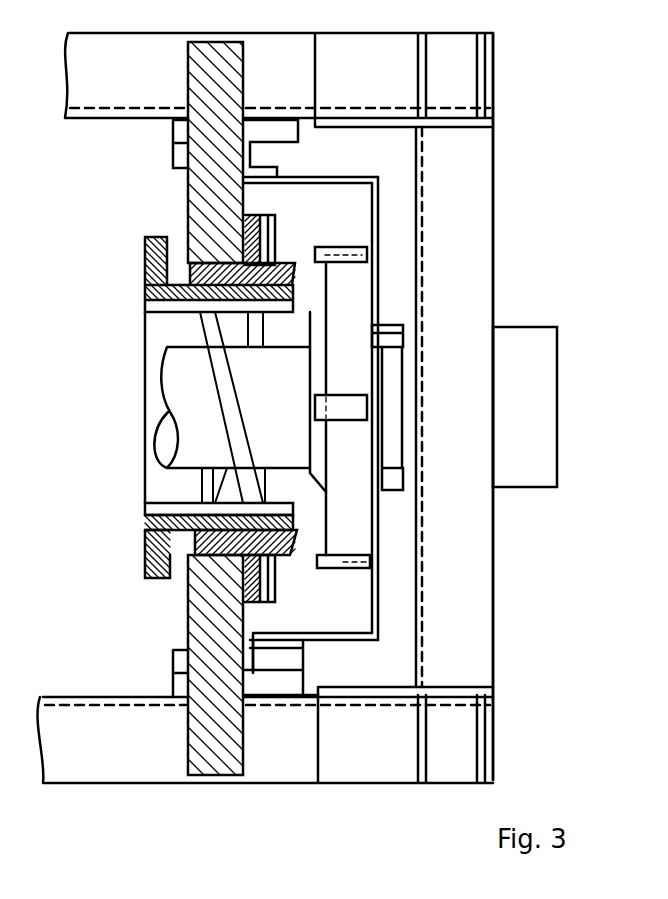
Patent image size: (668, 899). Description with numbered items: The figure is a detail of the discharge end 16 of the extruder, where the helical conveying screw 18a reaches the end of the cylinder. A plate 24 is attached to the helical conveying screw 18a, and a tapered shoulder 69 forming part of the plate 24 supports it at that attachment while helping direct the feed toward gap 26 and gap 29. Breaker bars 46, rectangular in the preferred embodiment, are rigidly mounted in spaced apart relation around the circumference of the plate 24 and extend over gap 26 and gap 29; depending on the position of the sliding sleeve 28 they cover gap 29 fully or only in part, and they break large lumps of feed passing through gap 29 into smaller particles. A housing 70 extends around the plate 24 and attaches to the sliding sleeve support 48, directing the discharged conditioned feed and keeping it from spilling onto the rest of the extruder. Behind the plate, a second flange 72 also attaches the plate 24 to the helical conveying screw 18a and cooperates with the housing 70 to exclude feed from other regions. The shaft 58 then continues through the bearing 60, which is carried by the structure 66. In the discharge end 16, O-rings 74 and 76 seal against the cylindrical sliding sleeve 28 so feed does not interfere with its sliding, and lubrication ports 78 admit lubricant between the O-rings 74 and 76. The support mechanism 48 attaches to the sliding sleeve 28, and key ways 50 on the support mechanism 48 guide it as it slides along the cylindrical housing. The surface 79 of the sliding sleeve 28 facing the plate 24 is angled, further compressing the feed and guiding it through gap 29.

The discharge end 16 is at (147, 273).
The helical conveying screw 18a is at (167, 372).
The plate 24 is at (350, 517).
The gap 26 is at (292, 327).
The sliding sleeve 28 is at (288, 556).
The gap 29 is at (373, 213).
The breaker bars 46 is at (345, 570).
The sliding sleeve support 48 is at (231, 767).
The key ways 50 is at (287, 687).
The shaft 58 is at (405, 363).
The bearing 60 is at (543, 365).
The structure 66 is at (490, 510).
The tapered shoulder 69 is at (320, 363).
The housing 70 is at (380, 232).
The second flange 72 is at (393, 433).
The O-ring 74 is at (197, 510).
The O-ring 76 is at (293, 532).
The lubrication ports 78 is at (275, 223).
The surface 79 is at (293, 543).